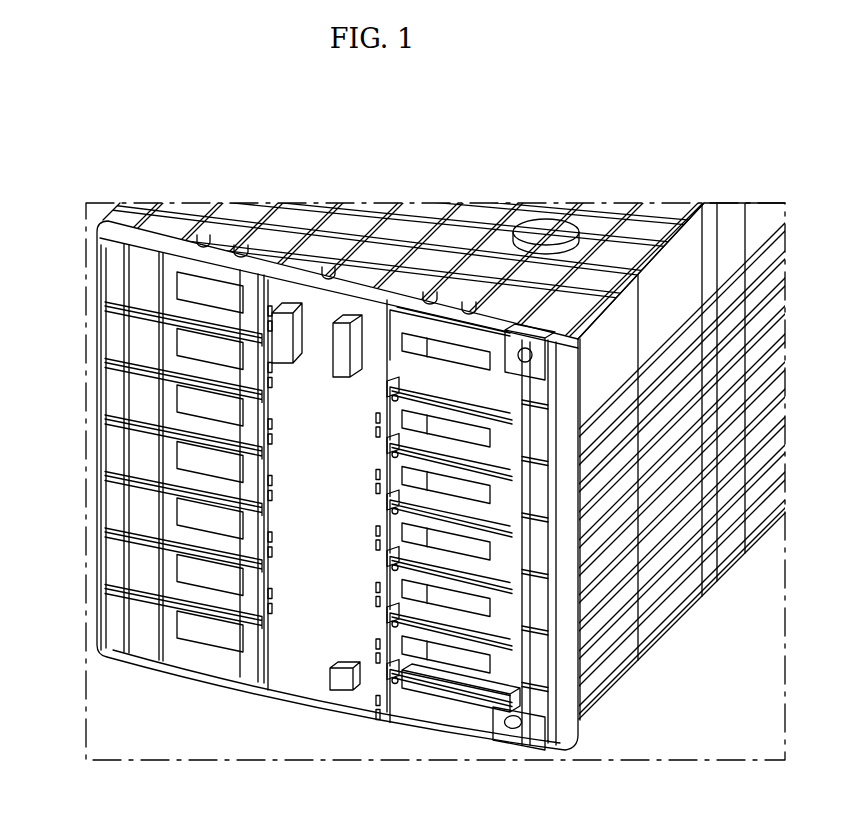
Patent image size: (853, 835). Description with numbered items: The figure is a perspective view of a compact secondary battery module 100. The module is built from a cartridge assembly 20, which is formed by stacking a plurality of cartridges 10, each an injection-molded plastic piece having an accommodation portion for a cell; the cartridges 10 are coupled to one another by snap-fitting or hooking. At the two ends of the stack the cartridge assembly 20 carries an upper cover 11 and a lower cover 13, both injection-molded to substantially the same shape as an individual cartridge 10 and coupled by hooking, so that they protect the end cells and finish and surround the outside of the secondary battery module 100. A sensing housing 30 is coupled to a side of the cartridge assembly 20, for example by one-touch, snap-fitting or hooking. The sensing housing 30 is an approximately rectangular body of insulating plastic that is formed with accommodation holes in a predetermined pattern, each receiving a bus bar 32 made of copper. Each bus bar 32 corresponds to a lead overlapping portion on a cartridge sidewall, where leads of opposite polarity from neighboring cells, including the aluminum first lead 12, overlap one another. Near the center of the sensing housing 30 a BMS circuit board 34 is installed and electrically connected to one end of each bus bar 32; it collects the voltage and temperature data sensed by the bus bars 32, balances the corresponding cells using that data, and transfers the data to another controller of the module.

The secondary battery module 100 is at (683, 697).
The cartridge 10 is at (782, 279).
The upper cover 11 is at (418, 230).
The first lead 12 is at (203, 292).
The lower cover 13 is at (778, 518).
The cartridge assembly 20 is at (684, 630).
The sensing housing 30 is at (80, 367).
The bus bar 32 is at (417, 650).
The BMS circuit board 34 is at (298, 652).